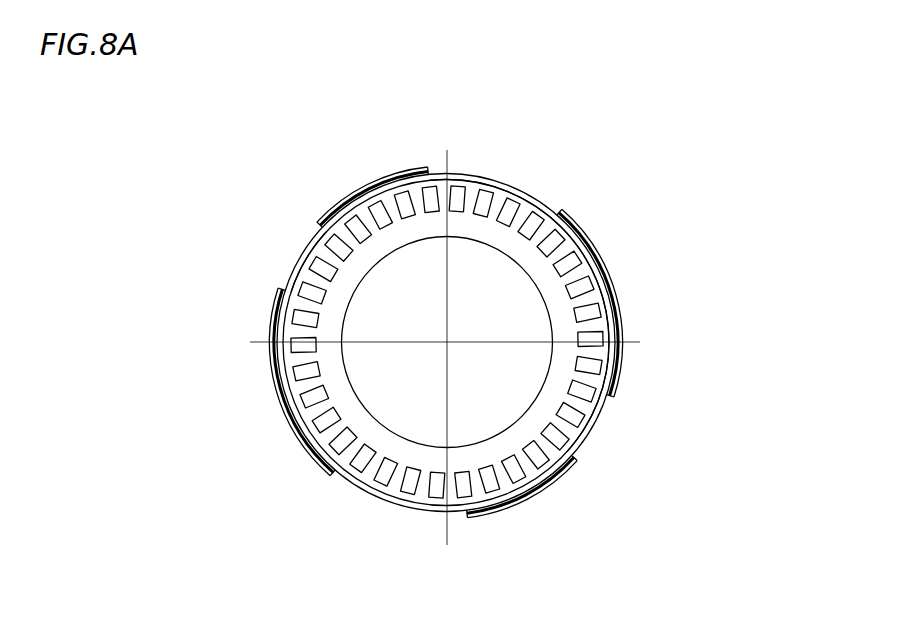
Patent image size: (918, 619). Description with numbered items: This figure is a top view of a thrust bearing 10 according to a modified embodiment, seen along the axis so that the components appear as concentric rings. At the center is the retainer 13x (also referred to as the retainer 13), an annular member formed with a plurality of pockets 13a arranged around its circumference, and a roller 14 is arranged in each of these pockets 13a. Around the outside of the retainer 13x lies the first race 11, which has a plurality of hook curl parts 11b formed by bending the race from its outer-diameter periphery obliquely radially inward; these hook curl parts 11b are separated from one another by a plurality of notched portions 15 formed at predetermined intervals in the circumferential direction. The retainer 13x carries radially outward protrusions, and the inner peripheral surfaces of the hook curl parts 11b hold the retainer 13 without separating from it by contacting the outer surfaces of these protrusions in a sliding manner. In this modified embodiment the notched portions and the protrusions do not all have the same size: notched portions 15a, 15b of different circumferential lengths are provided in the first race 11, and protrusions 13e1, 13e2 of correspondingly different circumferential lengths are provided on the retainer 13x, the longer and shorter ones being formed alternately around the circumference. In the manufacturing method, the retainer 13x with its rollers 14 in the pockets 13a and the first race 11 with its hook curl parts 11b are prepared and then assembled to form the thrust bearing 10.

The thrust bearing 10 is at (650, 155).
The first race 11 is at (556, 493).
The hook curl part 11b is at (505, 514).
The retainer 13 is at (446, 343).
The pocket 13a is at (582, 262).
The protrusion 13e1 is at (598, 422).
The protrusion 13e2 is at (498, 182).
The retainer 13x is at (291, 251).
The roller 14 is at (461, 189).
The notched portion 15 is at (372, 197).
The notched portion 15a is at (337, 469).
The notched portion 15b is at (612, 398).